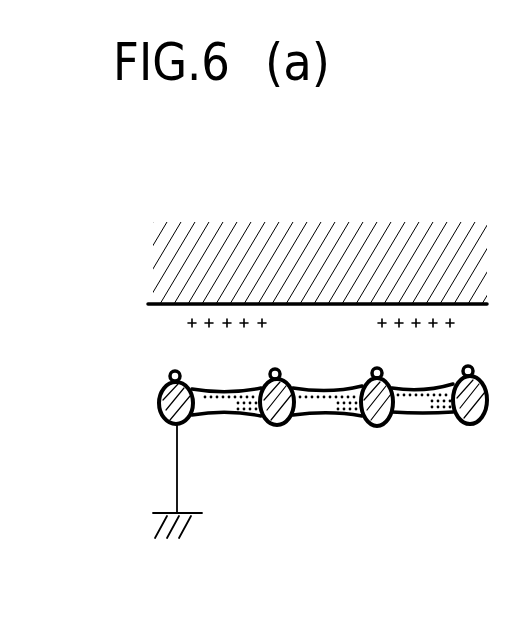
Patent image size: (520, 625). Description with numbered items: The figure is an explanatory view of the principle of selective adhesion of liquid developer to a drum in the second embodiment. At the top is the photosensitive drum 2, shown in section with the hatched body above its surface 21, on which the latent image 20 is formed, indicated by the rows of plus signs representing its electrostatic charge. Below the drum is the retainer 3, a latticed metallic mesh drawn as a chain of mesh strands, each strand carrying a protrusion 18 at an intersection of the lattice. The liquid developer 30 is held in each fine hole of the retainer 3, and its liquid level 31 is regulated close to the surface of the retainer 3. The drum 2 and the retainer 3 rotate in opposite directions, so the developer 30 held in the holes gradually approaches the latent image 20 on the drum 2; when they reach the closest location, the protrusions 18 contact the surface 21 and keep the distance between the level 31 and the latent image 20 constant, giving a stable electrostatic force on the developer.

The photosensitive drum 2 is at (338, 200).
The latent image 20 is at (428, 328).
The surface of the photosensitive drum 21 is at (164, 304).
The retainer 3 is at (337, 452).
The liquid developer 30 is at (228, 404).
The liquid level of the liquid developer 31 is at (228, 392).
The protrusion 18 is at (168, 371).